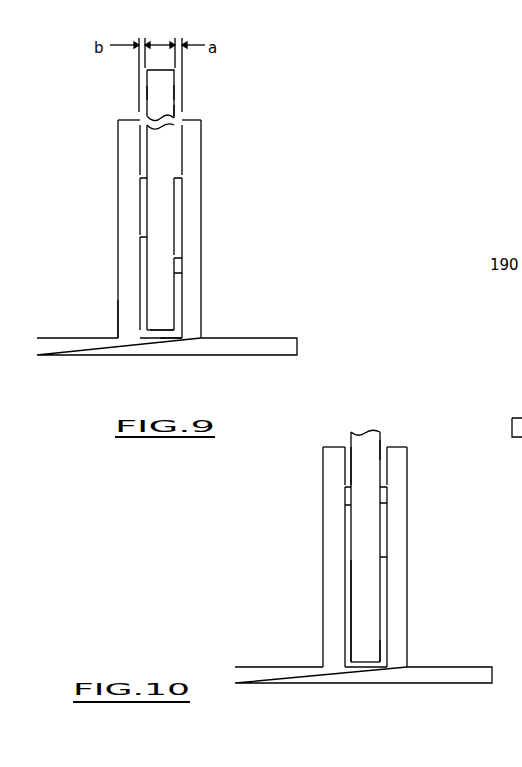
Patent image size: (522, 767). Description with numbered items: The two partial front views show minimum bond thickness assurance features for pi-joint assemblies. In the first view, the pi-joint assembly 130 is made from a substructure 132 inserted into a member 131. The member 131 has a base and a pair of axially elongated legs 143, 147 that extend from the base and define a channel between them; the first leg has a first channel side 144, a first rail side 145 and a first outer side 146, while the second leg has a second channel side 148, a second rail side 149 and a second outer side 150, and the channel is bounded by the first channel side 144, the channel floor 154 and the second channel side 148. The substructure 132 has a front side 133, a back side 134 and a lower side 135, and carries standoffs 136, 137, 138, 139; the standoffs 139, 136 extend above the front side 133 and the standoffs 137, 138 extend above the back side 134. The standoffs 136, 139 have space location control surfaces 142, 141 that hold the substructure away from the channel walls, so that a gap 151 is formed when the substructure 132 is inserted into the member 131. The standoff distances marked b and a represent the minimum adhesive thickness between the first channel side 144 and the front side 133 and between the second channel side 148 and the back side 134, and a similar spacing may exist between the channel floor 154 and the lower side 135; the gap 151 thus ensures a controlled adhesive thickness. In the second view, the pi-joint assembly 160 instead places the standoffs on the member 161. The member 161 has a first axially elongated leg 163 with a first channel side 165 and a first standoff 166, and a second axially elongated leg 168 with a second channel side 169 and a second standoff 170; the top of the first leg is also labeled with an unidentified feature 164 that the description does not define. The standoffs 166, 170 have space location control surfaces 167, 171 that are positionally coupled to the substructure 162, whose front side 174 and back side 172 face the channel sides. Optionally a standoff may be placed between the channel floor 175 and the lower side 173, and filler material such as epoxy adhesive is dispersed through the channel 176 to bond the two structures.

In FIG. 9, the pi-joint assembly 130 is at (238, 231).
In FIG. 9, the member 131 is at (276, 338).
In FIG. 9, the substructure 132 is at (168, 78).
In FIG. 9, the front side 133 is at (143, 87).
In FIG. 9, the back side 134 is at (177, 92).
In FIG. 9, the lower side 135 is at (158, 333).
In FIG. 9, the standoff 136 is at (140, 222).
In FIG. 9, the standoff 137 is at (183, 160).
In FIG. 9, the standoff 138 is at (185, 262).
In FIG. 9, the standoff 139 is at (141, 160).
In FIG. 9, the space location control surface 141 is at (140, 170).
In FIG. 9, the space location control surface 142 is at (140, 228).
In FIG. 9, the axially elongated leg 143 is at (128, 255).
In FIG. 9, the first channel side 144 is at (140, 287).
In FIG. 9, the first rail side 145 is at (125, 119).
In FIG. 9, the first outer side 146 is at (118, 318).
In FIG. 9, the axially elongated leg 147 is at (195, 278).
In FIG. 9, the second channel side 148 is at (183, 205).
In FIG. 9, the second rail side 149 is at (190, 120).
In FIG. 9, the second outer side 150 is at (203, 243).
In FIG. 9, the gap 151 is at (187, 109).
In FIG. 9, the channel floor 154 is at (176, 343).
In FIG. 10, the pi-joint assembly 160 is at (256, 501).
In FIG. 10, the member 161 is at (288, 665).
In FIG. 10, the substructure 162 is at (368, 435).
In FIG. 10, the first axially elongated leg 163 is at (323, 473).
In FIG. 10, the left arm top 164 is at (334, 448).
In FIG. 10, the first channel side 165 is at (348, 456).
In FIG. 10, the first standoff 166 is at (345, 507).
In FIG. 10, the space location control surface 167 is at (347, 497).
In FIG. 10, the second axially elongated leg 168 is at (395, 447).
In FIG. 10, the second channel side 169 is at (392, 462).
In FIG. 10, the second standoff 170 is at (385, 505).
In FIG. 10, the space location control surface 171 is at (387, 490).
In FIG. 10, the back side 172 is at (385, 557).
In FIG. 10, the lower side 173 is at (360, 667).
In FIG. 10, the front side 174 is at (352, 590).
In FIG. 10, the channel floor 175 is at (382, 665).
In FIG. 10, the channel 176 is at (394, 435).